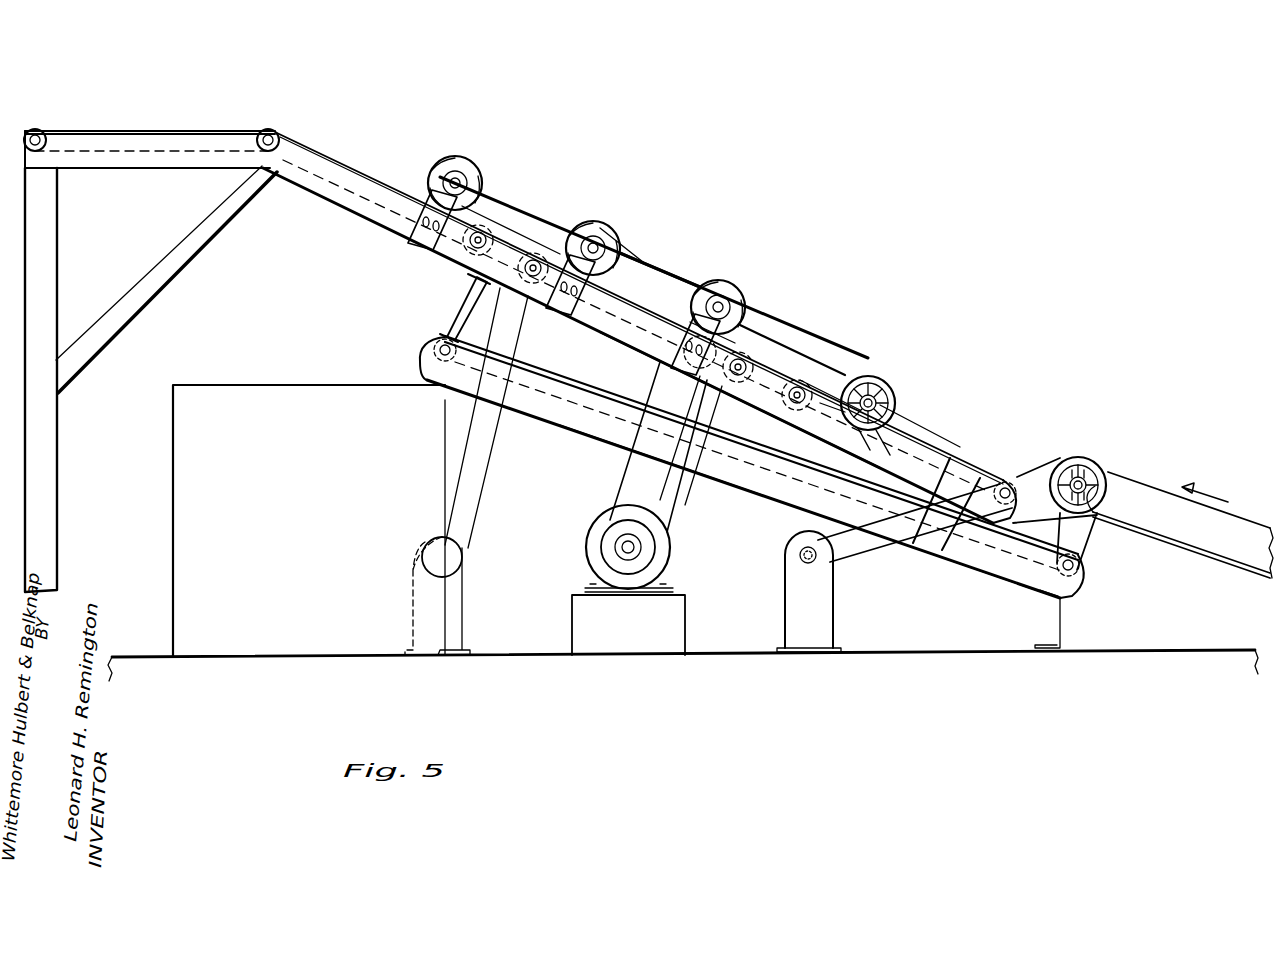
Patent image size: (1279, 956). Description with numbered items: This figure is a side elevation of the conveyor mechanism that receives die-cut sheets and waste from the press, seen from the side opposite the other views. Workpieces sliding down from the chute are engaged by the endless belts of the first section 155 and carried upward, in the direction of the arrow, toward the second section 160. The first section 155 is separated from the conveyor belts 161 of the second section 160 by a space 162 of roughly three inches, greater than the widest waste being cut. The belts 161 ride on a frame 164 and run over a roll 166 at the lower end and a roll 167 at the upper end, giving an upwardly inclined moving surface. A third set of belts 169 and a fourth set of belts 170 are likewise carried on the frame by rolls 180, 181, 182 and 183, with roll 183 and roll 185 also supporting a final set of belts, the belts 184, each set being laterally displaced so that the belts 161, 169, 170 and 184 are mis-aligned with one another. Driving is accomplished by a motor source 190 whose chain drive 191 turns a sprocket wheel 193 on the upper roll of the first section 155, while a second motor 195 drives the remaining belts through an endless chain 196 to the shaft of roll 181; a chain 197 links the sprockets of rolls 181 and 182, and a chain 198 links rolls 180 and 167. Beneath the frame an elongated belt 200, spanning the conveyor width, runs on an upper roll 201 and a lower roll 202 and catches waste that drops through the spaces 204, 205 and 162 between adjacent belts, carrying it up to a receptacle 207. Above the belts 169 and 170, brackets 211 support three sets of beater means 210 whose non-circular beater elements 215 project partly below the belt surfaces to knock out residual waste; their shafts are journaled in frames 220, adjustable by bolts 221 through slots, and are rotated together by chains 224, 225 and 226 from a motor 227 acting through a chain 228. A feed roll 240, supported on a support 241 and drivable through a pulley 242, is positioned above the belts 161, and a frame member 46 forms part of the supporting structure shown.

The frame member 46 is at (735, 330).
The first section 155 is at (1152, 470).
The second section 160 is at (1003, 476).
The conveyor belts 161 is at (958, 447).
The space 162 is at (1035, 476).
The frame 164 is at (855, 452).
The roll 166 is at (1010, 487).
The roll 167 is at (830, 400).
The third set of belts 169 is at (640, 290).
The fourth set of belts 170 is at (340, 160).
The roll 180 is at (755, 350).
The roll 181 is at (600, 230).
The roll 182 is at (465, 205).
The roll 183 is at (275, 130).
The belts 184 is at (115, 131).
The roll 185 is at (35, 129).
The motor source 190 is at (820, 622).
The chain drive 191 is at (875, 560).
The sprocket wheel 193 is at (1085, 460).
The second motor 195 is at (415, 555).
The endless chain 196 is at (490, 335).
The chain 197 is at (545, 250).
The chain 198 is at (800, 378).
The elongated belt 200 is at (612, 395).
The upper roll 201 is at (430, 345).
The lower roll 202 is at (1080, 569).
The space 204 is at (490, 232).
The space 205 is at (764, 380).
The receptacle 207 is at (330, 458).
The beater means 210 is at (452, 155).
The brackets 211 is at (560, 285).
The beater elements 215 is at (722, 300).
The frames 220 is at (688, 352).
The bolts 221 is at (690, 380).
The chain 224 is at (850, 402).
The chain 225 is at (630, 262).
The chain 226 is at (600, 228).
The motor 227 is at (590, 530).
The chain 228 is at (635, 475).
The feed roll 240 is at (901, 395).
The support 241 is at (890, 412).
The pulley 242 is at (878, 398).